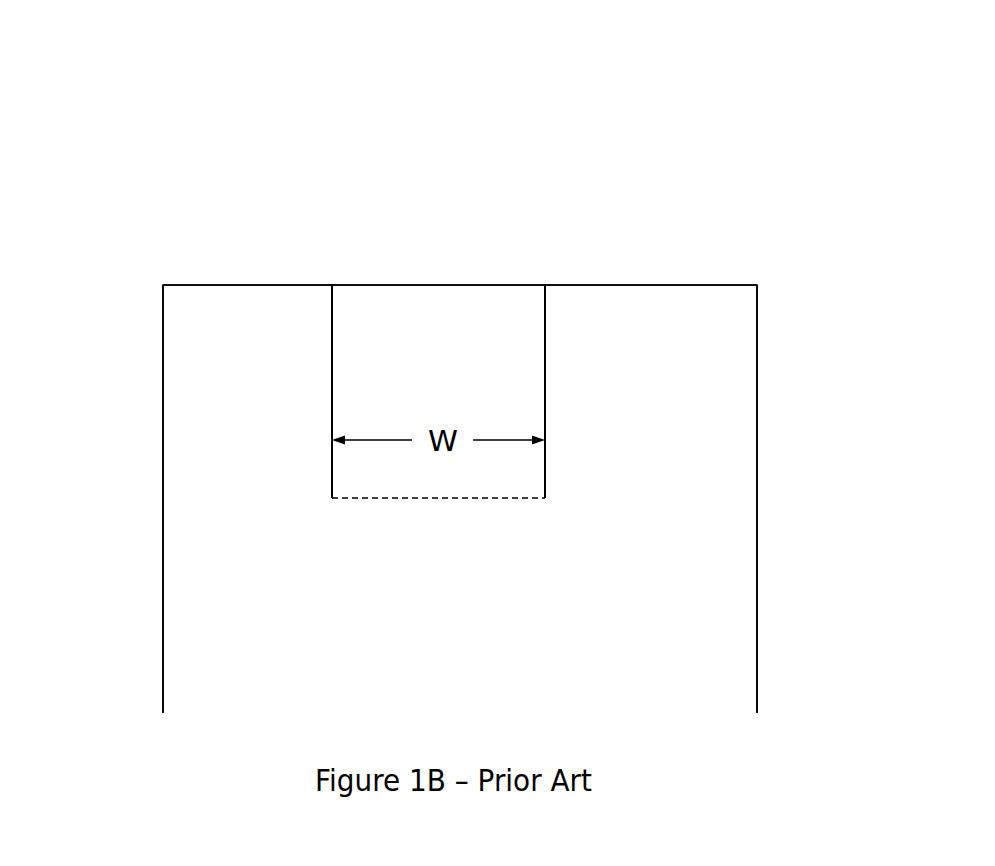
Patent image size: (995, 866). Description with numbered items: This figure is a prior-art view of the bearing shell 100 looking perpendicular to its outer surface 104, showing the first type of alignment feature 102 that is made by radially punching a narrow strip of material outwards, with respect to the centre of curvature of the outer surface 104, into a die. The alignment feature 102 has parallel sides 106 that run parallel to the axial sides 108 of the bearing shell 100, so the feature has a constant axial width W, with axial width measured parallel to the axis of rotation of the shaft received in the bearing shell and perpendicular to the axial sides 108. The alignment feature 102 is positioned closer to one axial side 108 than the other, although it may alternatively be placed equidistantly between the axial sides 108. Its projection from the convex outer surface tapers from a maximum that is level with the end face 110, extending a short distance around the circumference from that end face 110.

The bearing shell 100 is at (138, 96).
The alignment feature 102 is at (465, 370).
The outer surface 104 is at (628, 594).
The parallel sides 106 is at (332, 328).
The axial sides 108 is at (163, 360).
The end face 110 is at (663, 285).